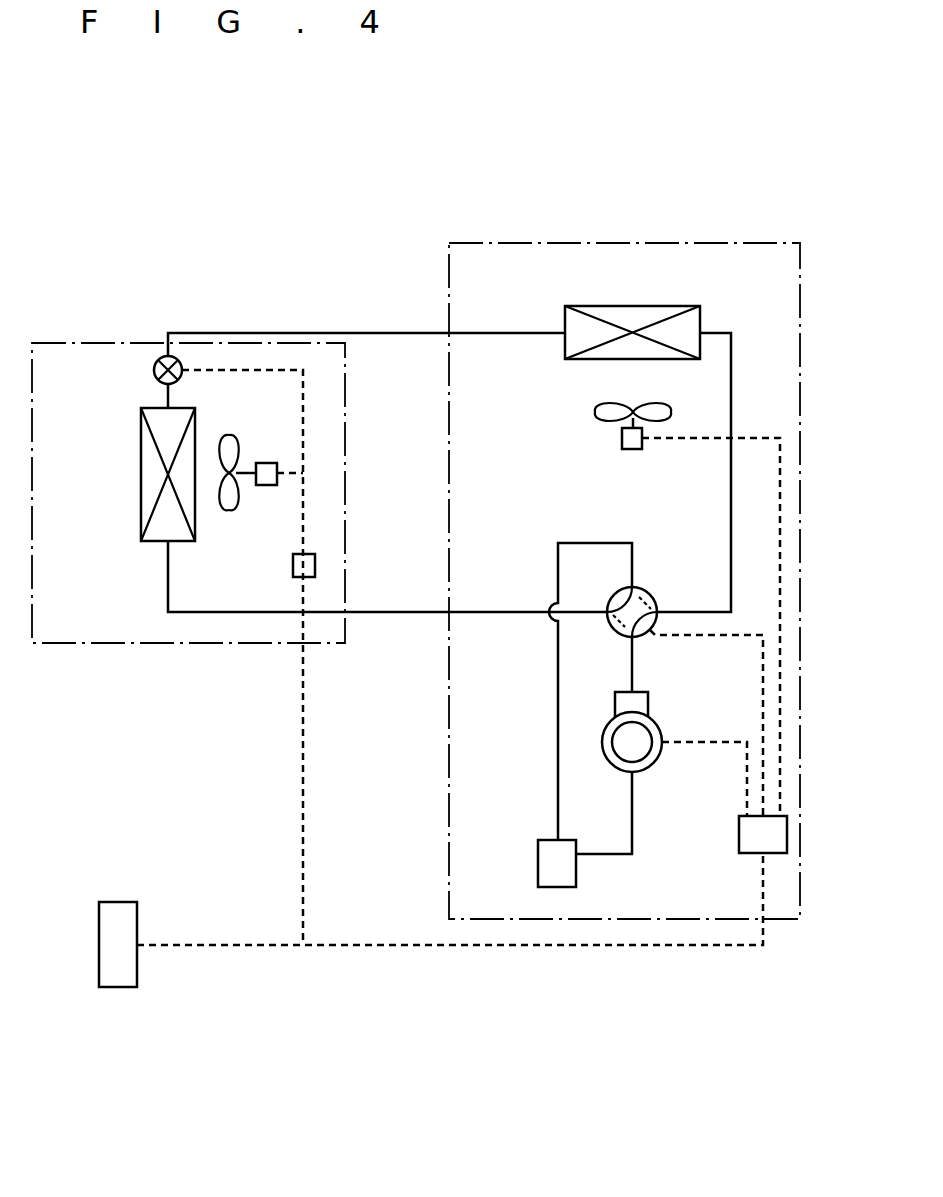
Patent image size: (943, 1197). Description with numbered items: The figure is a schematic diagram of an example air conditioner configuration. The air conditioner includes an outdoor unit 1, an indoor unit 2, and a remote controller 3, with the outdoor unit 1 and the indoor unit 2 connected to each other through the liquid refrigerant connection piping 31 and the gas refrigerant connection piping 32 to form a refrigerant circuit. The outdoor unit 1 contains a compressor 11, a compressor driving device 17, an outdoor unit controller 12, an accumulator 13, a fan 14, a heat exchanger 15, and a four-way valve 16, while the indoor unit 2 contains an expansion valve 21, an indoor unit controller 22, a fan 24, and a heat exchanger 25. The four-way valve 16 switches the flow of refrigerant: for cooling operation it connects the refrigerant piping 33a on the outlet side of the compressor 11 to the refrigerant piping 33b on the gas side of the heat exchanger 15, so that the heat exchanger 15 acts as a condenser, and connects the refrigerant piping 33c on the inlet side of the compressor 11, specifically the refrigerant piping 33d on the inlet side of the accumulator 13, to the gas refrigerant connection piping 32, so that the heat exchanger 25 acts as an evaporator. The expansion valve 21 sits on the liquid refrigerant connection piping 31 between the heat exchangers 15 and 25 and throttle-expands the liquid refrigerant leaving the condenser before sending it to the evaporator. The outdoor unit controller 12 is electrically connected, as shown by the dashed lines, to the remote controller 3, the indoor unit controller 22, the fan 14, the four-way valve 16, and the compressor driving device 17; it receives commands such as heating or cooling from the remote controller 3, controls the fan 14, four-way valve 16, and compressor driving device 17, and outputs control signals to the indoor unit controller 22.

The outdoor unit 1 is at (625, 242).
The indoor unit 2 is at (112, 343).
The remote controller 3 is at (120, 902).
The compressor 11 is at (640, 692).
The outdoor unit controller 12 is at (739, 837).
The accumulator 13 is at (545, 840).
The fan 14 is at (587, 422).
The heat exchanger 15 is at (634, 306).
The four-way valve 16 is at (652, 592).
The compressor driving device 17 is at (610, 752).
The expansion valve 21 is at (153, 370).
The indoor unit controller 22 is at (293, 567).
The fan 24 is at (293, 462).
The heat exchanger 25 is at (141, 475).
The liquid refrigerant connection piping 31 is at (395, 333).
The gas refrigerant connection piping 32 is at (395, 612).
The refrigerant piping 33a is at (632, 655).
The refrigerant piping 33b is at (731, 498).
The refrigerant piping 33c is at (600, 854).
The refrigerant piping 33d is at (558, 683).